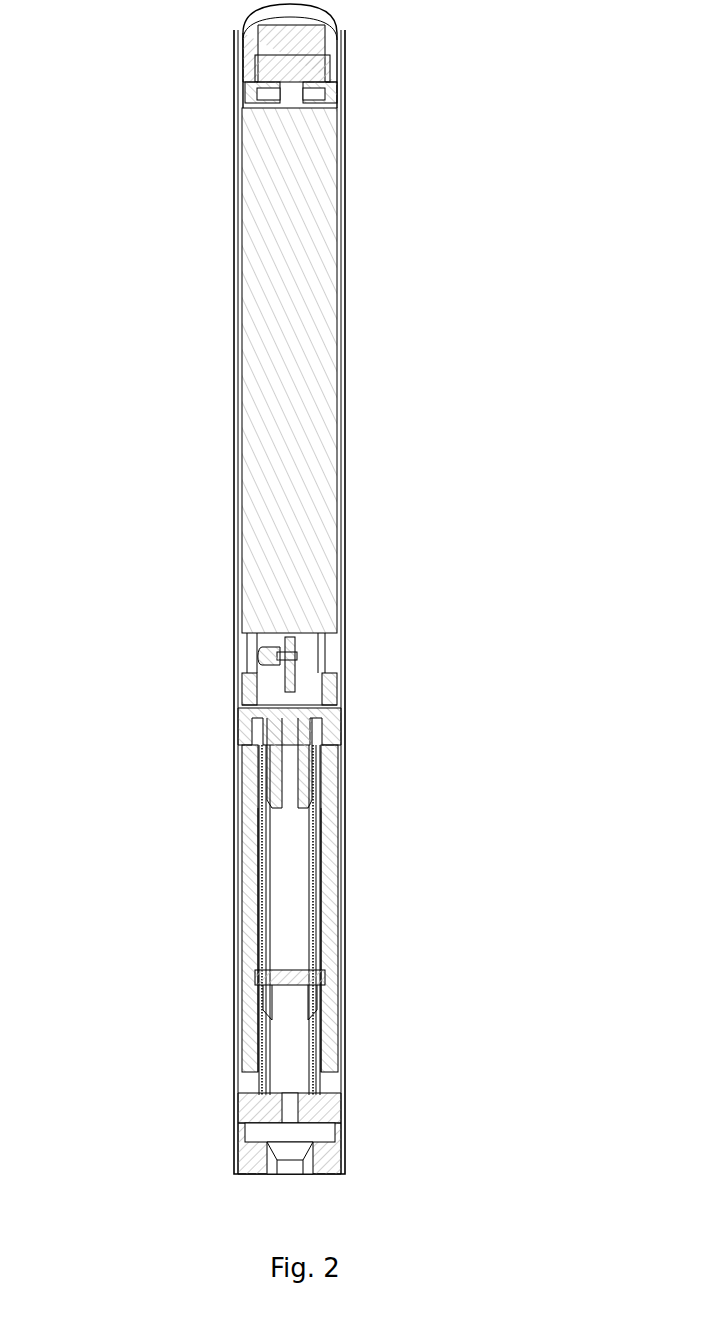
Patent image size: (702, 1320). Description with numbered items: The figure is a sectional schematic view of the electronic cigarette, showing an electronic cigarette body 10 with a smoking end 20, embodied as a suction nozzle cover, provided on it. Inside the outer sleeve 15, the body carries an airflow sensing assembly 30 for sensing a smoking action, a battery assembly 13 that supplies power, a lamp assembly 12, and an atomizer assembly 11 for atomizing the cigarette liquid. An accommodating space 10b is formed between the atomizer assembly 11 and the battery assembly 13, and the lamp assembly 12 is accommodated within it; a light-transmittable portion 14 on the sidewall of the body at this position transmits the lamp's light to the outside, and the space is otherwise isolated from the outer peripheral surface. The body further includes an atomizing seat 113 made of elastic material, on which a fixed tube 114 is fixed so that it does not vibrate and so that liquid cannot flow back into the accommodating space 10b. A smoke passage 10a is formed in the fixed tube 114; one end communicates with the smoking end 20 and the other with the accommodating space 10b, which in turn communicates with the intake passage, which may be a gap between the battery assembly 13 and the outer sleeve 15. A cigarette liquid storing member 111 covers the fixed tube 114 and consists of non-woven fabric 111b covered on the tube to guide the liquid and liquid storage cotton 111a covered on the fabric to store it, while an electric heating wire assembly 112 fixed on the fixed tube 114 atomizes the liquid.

The electronic cigarette body 10 is at (405, 560).
The smoke passage 10a is at (293, 863).
The accommodating space 10b is at (270, 690).
The atomizer assembly 11 is at (333, 762).
The lamp assembly 12 is at (292, 665).
The battery assembly 13 is at (290, 575).
The light-transmittable portion 14 is at (258, 655).
The outer sleeve 15 is at (343, 908).
The smoking end 20 is at (287, 1152).
The airflow sensing assembly 30 is at (317, 62).
The cigarette liquid storing member 111 is at (130, 858).
The liquid storage cotton 111a is at (265, 863).
The non-woven fabric 111b is at (265, 917).
The electric heating wire assembly 112 is at (265, 980).
The atomizing seat 113 is at (272, 788).
The fixed tube 114 is at (263, 830).